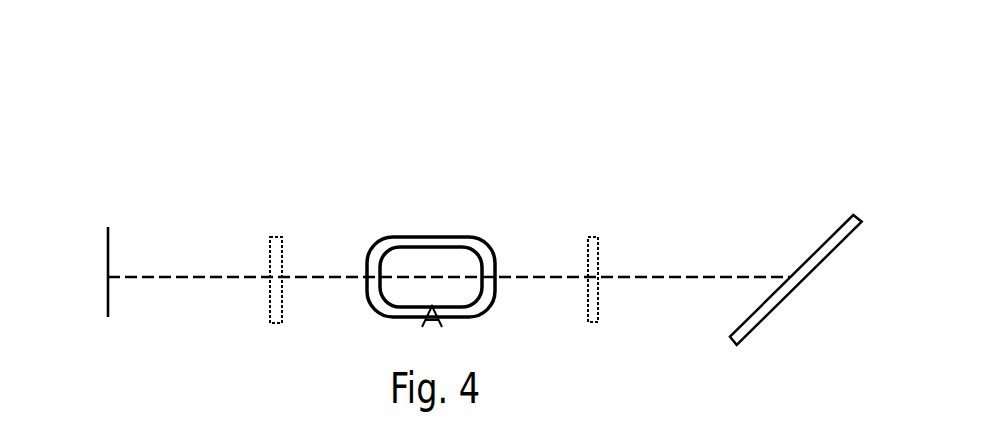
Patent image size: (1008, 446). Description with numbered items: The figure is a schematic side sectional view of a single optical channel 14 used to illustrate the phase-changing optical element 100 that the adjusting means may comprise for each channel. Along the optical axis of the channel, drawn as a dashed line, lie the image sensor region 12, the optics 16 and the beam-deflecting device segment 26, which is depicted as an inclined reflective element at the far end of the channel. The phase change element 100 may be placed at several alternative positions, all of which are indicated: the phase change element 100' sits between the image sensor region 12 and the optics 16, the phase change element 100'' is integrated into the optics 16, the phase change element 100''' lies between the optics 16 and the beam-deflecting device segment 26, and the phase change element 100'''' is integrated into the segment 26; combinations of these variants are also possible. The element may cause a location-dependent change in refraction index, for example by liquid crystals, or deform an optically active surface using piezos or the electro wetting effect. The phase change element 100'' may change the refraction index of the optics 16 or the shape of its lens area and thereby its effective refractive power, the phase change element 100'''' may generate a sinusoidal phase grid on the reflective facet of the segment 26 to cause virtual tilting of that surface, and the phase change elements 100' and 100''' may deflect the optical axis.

The image sensor region 12 is at (108, 246).
The optical channel 14 is at (465, 224).
The optics 16 is at (408, 237).
The beam-deflecting device segment 26 is at (833, 228).
The phase-changing optical element 100 is at (552, 188).
The phase change element between image sensor region and optics 100' is at (275, 212).
The phase change element integrated into the optics 100'' is at (431, 204).
The phase change element between optics and beam-deflecting segment 100''' is at (593, 211).
The phase change element integrated into the segment 100'''' is at (796, 223).